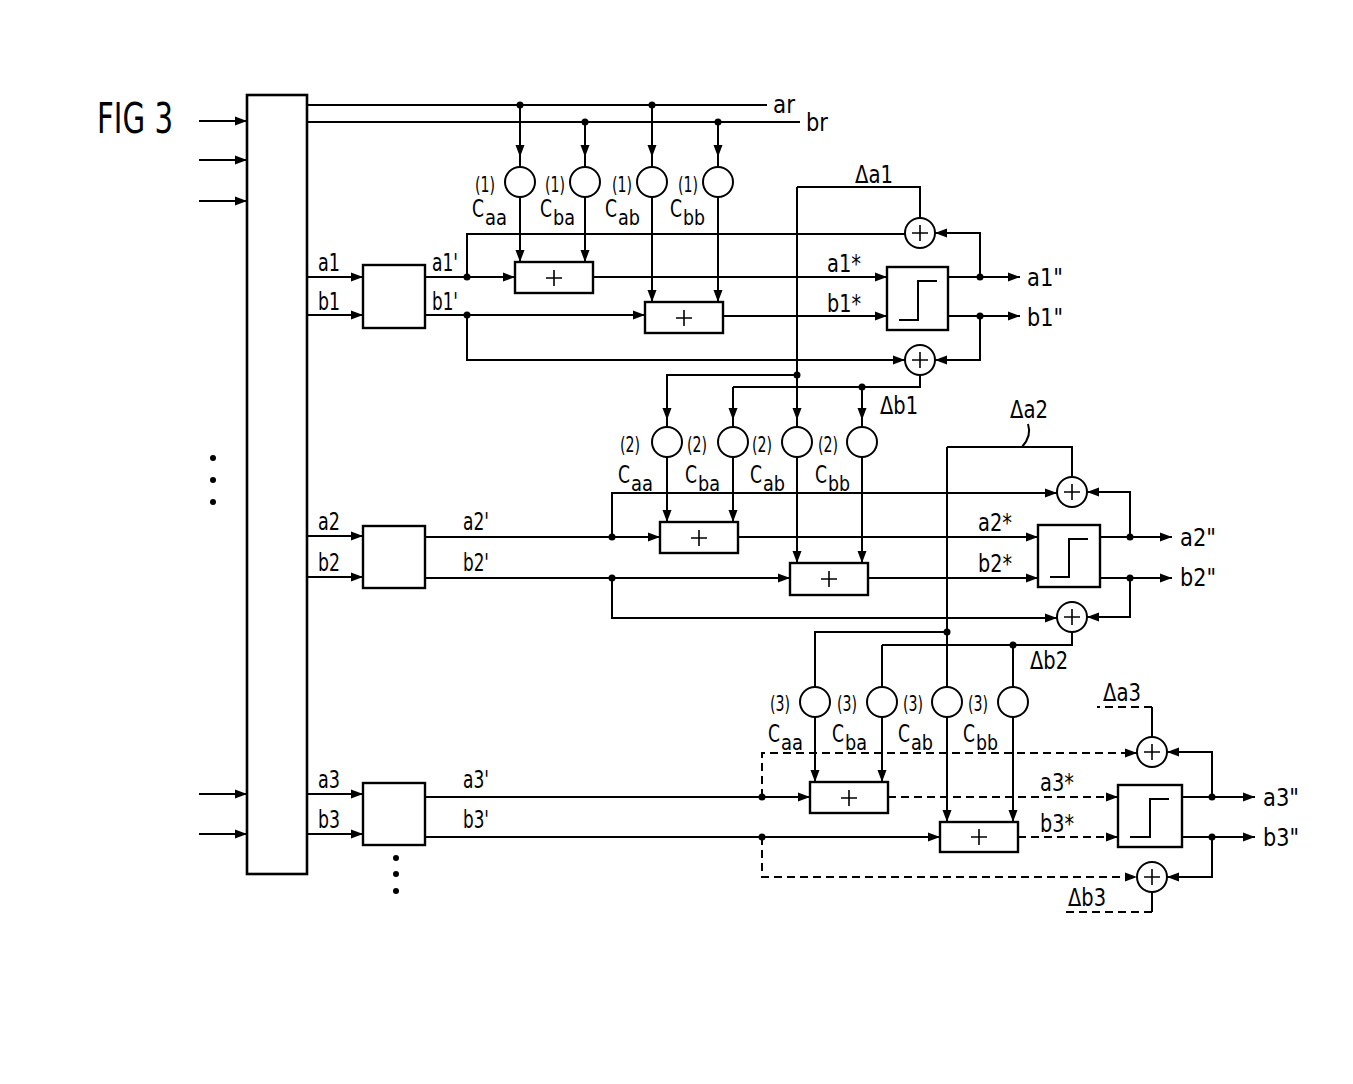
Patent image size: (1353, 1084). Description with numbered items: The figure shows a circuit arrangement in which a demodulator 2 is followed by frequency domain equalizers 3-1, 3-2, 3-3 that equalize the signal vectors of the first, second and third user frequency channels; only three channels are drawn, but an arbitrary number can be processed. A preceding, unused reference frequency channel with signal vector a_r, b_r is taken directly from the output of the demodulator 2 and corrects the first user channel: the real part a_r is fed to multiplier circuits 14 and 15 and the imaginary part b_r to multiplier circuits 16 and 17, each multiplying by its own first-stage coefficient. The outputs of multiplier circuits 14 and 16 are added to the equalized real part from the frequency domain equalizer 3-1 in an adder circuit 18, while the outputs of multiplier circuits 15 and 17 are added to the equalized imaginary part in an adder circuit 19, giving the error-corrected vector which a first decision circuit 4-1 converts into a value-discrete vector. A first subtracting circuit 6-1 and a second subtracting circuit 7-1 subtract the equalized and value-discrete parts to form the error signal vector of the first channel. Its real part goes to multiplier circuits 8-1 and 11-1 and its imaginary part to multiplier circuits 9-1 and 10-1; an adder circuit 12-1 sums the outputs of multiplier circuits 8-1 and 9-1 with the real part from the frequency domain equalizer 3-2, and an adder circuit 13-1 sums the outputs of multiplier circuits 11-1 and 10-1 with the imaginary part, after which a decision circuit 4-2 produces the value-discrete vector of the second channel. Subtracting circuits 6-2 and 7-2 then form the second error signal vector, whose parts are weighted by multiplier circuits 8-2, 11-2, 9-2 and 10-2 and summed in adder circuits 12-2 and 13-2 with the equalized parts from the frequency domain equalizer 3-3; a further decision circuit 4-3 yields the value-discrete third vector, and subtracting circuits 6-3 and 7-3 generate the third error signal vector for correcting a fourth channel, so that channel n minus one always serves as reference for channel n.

The demodulator 2 is at (307, 424).
The frequency domain equalizer 3-1 is at (389, 265).
The frequency domain equalizer 3-2 is at (389, 526).
The frequency domain equalizer 3-3 is at (389, 783).
The first decision circuit 4-1 is at (950, 302).
The decision circuit 4-2 is at (1103, 560).
The decision circuit 4-3 is at (1185, 817).
The first subtracting circuit 6-1 is at (928, 220).
The subtracting circuit 6-2 is at (1080, 479).
The subtracting circuit 6-3 is at (1160, 737).
The second subtracting circuit 7-1 is at (925, 377).
The second subtracting circuit 7-2 is at (1080, 634).
The subtracting circuit 7-3 is at (1165, 888).
The multiplier circuit 8-1 is at (655, 431).
The multiplier circuit 9-1 is at (721, 431).
The multiplier circuit 10-1 is at (851, 431).
The multiplier circuit 11-1 is at (786, 431).
The multiplier circuit 8-2 is at (803, 691).
The multiplier circuit 9-2 is at (870, 691).
The multiplier circuit 10-2 is at (1002, 691).
The multiplier circuit 11-2 is at (936, 691).
The adder circuit 12-1 is at (738, 529).
The adder circuit 13-1 is at (868, 573).
The adder circuit 12-2 is at (888, 790).
The adder circuit 13-2 is at (940, 845).
The multiplier circuit 14 is at (508, 171).
The multiplier circuit 15 is at (640, 171).
The multiplier circuit 16 is at (573, 171).
The multiplier circuit 17 is at (706, 171).
The adder circuit 18 is at (593, 268).
The adder circuit 19 is at (723, 311).